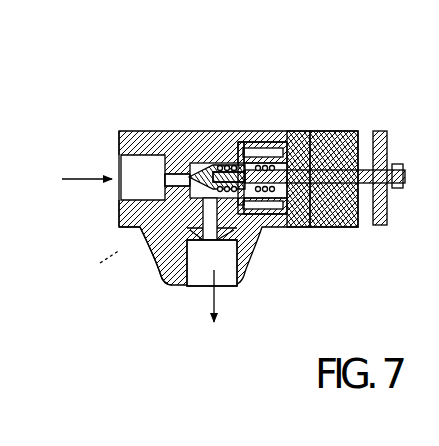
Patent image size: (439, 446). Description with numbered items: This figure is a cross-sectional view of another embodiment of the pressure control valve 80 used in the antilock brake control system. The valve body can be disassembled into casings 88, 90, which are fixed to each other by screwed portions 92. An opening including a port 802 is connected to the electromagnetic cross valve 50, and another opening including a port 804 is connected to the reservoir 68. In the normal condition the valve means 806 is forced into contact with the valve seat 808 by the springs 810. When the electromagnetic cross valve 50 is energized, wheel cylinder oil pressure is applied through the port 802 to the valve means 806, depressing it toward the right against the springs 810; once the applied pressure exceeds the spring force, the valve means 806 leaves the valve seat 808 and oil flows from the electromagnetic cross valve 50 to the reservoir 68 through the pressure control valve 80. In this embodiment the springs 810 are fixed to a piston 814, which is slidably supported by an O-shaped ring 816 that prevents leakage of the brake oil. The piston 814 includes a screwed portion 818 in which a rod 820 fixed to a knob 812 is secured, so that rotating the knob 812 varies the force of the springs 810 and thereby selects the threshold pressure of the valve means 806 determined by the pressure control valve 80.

The pressure control valve 80 is at (250, 149).
The casing 88 is at (186, 143).
The casing 90 is at (334, 186).
The screwed portions 92 is at (264, 130).
The port 802 is at (172, 172).
The port 804 is at (237, 242).
The valve means 806 is at (158, 255).
The valve seat 808 is at (143, 232).
The springs 810 is at (221, 142).
The knob 812 is at (397, 125).
The piston 814 is at (303, 130).
The O-shaped ring 816 is at (305, 190).
The screwed portion 818 is at (354, 190).
The rod 820 is at (364, 130).
The reservoir 68 is at (156, 280).
The electromagnetic cross valve 50 is at (61, 146).